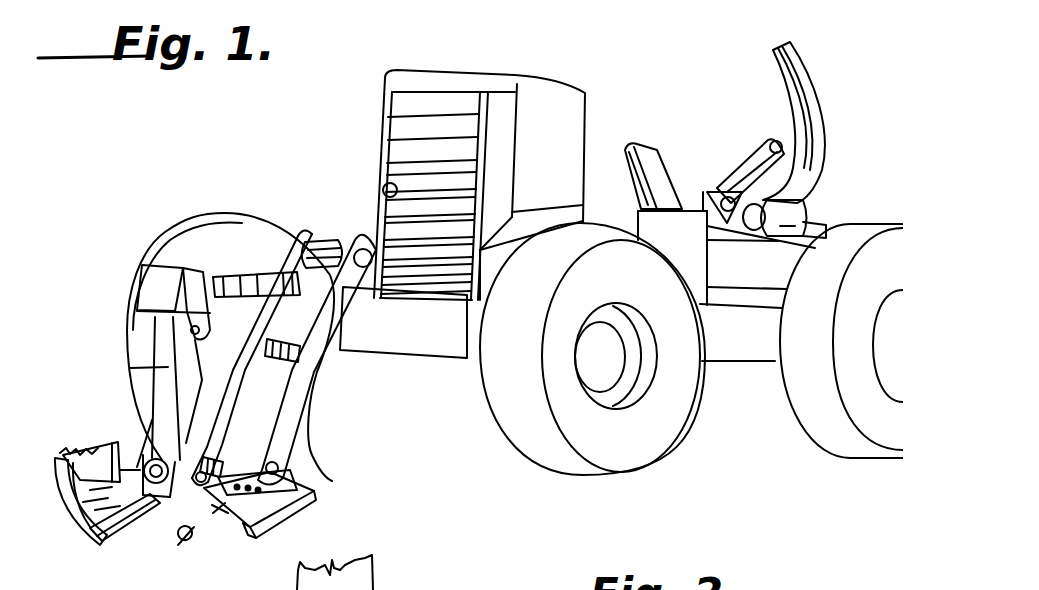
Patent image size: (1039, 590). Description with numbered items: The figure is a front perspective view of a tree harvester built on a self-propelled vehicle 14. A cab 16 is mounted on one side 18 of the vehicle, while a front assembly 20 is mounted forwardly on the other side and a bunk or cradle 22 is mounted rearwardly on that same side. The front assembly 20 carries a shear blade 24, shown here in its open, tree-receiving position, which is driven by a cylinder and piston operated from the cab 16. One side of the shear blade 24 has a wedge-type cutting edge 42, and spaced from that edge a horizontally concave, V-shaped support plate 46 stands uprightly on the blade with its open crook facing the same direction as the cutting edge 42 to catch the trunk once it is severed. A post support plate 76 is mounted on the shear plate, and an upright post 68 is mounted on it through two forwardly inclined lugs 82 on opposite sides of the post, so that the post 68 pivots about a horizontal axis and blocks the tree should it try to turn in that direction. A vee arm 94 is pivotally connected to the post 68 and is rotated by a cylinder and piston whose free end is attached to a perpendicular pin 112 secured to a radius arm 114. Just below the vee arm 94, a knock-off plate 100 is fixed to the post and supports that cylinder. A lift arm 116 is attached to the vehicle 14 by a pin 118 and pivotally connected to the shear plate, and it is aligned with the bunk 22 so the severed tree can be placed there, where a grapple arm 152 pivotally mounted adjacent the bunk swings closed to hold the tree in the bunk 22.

The self-propelled vehicle 14 is at (752, 353).
The cab 16 is at (580, 107).
The one side 18 is at (433, 372).
The front assembly 20 is at (118, 420).
The bunk or cradle 22 is at (662, 170).
The shear blade 24 is at (130, 522).
The cutting edge 42 is at (122, 508).
The support plate 46 is at (66, 493).
The post 68 is at (208, 347).
The post support plate 76 is at (308, 488).
The lugs 82 is at (187, 457).
The vee arm 94 is at (218, 300).
The knock-off plate 100 is at (231, 305).
The perpendicular pin 112 is at (250, 452).
The radius arm 114 is at (212, 346).
The lift arm 116 is at (323, 364).
The pin 118 is at (322, 256).
The grapple arm 152 is at (803, 98).